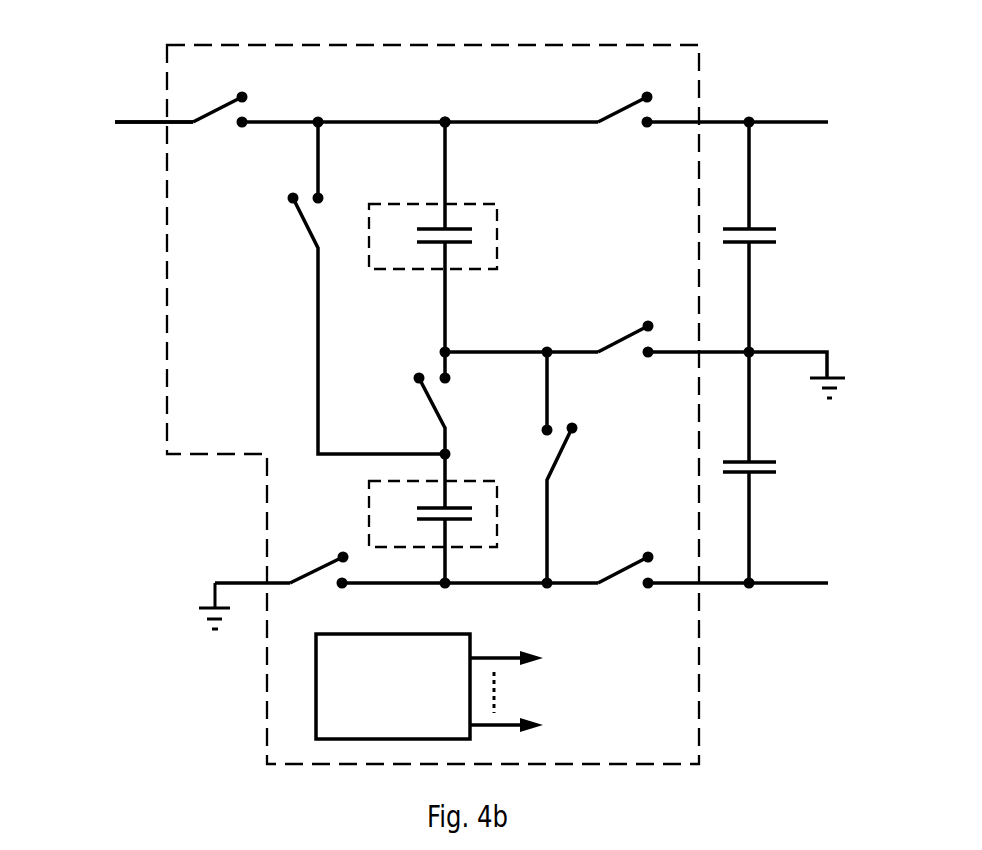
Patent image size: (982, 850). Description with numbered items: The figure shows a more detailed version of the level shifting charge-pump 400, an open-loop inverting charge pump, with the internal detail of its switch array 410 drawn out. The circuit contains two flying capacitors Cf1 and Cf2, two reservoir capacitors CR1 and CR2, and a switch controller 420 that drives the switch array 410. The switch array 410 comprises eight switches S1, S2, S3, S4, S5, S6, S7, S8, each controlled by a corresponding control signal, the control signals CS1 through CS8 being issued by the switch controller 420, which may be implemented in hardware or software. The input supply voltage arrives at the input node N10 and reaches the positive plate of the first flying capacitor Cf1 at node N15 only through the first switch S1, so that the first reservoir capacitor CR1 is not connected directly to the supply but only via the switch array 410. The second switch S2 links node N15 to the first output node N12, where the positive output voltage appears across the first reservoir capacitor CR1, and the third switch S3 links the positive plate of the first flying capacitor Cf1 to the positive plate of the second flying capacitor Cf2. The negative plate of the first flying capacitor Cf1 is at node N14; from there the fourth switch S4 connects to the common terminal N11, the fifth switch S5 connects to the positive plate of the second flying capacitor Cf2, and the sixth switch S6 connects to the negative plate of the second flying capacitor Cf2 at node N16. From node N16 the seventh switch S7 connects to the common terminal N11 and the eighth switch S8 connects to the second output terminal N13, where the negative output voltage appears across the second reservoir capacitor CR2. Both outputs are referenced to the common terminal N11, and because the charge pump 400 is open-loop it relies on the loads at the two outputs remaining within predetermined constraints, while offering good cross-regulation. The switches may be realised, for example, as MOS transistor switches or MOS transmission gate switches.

The level shifting charge-pump 400 is at (470, 404).
The switch array 410 is at (449, 404).
The switch controller 420 is at (393, 686).
The first switch S1 is at (220, 99).
The second switch S2 is at (625, 99).
The third switch S3 is at (360, 291).
The fourth switch S4 is at (626, 329).
The fifth switch S5 is at (423, 430).
The sixth switch S6 is at (569, 470).
The seventh switch S7 is at (319, 561).
The eighth switch S8 is at (626, 561).
The first flying capacitor Cf1 is at (433, 237).
The second flying capacitor Cf2 is at (433, 532).
The first reservoir capacitor CR1 is at (770, 237).
The second reservoir capacitor CR2 is at (770, 467).
The control signal CS1 is at (536, 660).
The control signal CS8 is at (536, 725).
The input node N10 is at (154, 103).
The common terminal N11 is at (522, 471).
The first output node N12 is at (750, 106).
The second output terminal N13 is at (750, 599).
The node N14 is at (634, 350).
The node N15 is at (439, 109).
The node N16 is at (444, 599).